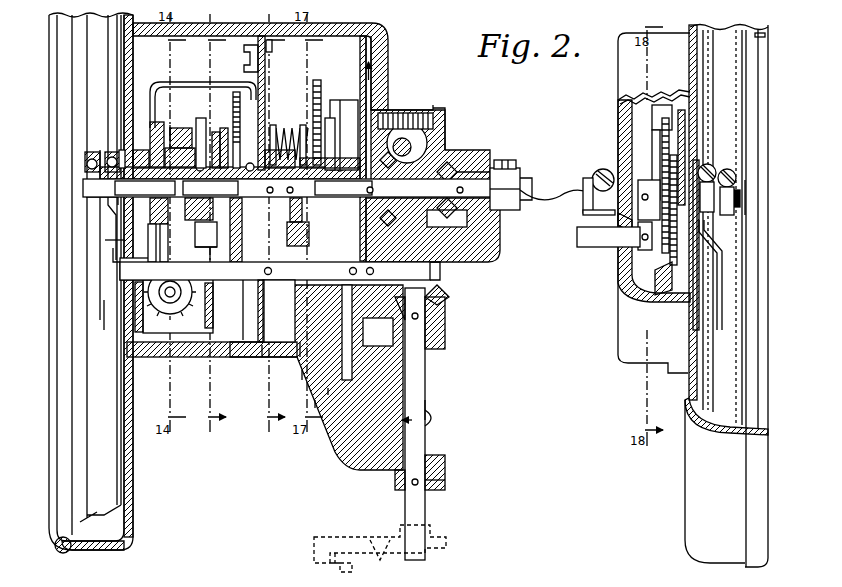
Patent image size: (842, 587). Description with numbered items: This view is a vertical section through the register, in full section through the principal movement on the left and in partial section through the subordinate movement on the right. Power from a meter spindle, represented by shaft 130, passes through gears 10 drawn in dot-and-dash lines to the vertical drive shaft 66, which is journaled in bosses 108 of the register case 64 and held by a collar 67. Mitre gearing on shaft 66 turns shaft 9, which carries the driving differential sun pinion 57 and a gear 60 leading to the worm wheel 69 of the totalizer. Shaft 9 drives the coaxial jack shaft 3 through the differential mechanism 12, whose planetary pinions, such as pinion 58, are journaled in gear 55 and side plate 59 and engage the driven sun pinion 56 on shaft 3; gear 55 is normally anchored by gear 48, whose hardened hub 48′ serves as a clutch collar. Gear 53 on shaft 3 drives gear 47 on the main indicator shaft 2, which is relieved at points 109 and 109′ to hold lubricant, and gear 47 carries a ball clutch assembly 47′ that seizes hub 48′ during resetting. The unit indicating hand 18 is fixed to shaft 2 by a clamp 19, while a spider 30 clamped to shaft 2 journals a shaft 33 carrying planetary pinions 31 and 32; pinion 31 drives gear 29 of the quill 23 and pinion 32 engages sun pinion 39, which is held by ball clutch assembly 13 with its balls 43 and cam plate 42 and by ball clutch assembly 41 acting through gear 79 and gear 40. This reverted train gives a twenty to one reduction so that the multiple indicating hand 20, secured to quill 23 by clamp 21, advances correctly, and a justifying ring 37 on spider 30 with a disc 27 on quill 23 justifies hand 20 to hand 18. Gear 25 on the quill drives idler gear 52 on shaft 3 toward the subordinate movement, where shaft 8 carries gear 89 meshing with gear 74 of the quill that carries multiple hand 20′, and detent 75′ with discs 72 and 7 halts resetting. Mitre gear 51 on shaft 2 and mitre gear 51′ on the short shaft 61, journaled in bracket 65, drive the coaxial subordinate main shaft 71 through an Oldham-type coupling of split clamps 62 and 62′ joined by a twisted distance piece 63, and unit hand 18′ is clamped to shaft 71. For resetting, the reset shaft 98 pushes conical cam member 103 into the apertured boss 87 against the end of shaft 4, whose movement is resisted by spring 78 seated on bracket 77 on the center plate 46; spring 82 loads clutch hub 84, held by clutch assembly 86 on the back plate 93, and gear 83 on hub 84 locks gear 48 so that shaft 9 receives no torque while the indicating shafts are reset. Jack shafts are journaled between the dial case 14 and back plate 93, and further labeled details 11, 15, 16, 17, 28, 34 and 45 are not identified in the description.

The main indicator shaft 2 is at (83, 188).
The jack shaft 3 is at (243, 278).
The shaft 4 is at (330, 118).
The disc 7 is at (672, 142).
The shaft of the subordinate movement 8 is at (598, 247).
The shaft 9 is at (412, 270).
The gears 10 is at (382, 553).
The pin 11 is at (158, 256).
The differential mechanism 12 is at (212, 371).
The ball clutch assembly 13 is at (238, 232).
The dial case 14 is at (74, 546).
The section line 15 is at (210, 223).
The section line 16 is at (269, 223).
The cover plate 17 is at (107, 492).
The unit indicating hand 18 is at (100, 230).
The unit indicating hand 18′ is at (728, 304).
The clamp 19 is at (88, 152).
The multiple indicating hand 20 is at (100, 312).
The multiple indicating hand 20′ is at (720, 383).
The clamp 21 is at (110, 152).
The sleeve or quill 23 is at (96, 212).
The gear 25 is at (124, 150).
The disc 27 is at (150, 140).
The strip 28 is at (112, 240).
The gear 29 is at (174, 138).
The spider 30 is at (168, 125).
The planetary pinion 31 is at (176, 252).
The planetary pinion 32 is at (212, 252).
The shaft 33 is at (205, 250).
The sleeve 34 is at (166, 128).
The justifying ring 37 is at (170, 125).
The sun pinion 39 is at (220, 135).
The gear 40 is at (243, 234).
The ball clutch assembly 41 is at (265, 98).
The ball clutch cam plate 42 is at (272, 46).
The clutch balls 43 is at (245, 60).
The pin 45 is at (260, 189).
The center plate 46 is at (258, 312).
The gear 47 is at (272, 125).
The ball clutch assembly 47′ is at (303, 125).
The gear 48 is at (386, 113).
The hardened steel hub 48′ is at (298, 190).
The mitre gear 51 is at (455, 168).
The mitre gear 51′ is at (470, 172).
The idler gear 52 is at (118, 252).
The gear 53 is at (285, 310).
The gear 55 is at (300, 345).
The driven differential sun pinion 56 is at (262, 345).
The driving differential sun pinion 57 is at (315, 405).
The differential planetary pinion 58 is at (297, 222).
The side plate 59 is at (330, 390).
The gear 60 is at (345, 405).
The short section of shaft 61 is at (504, 160).
The split clamp 62 is at (520, 212).
The split clamp 62′ is at (598, 168).
The twisted distance piece 63 is at (549, 205).
The register case 64 is at (388, 50).
The projecting bracket 65 is at (485, 238).
The vertical drive shaft 66 is at (428, 408).
The collar 67 is at (443, 483).
The worm wheel 69 is at (160, 307).
The main shaft of the subordinate movement 71 is at (746, 198).
The disc 72 is at (632, 222).
The gear 74 is at (694, 147).
The detent 75′ is at (660, 105).
The U-shaped supporting bracket 77 is at (212, 130).
The spring 78 is at (210, 135).
The gear 79 is at (236, 92).
The spring 82 is at (285, 135).
The gear 83 is at (322, 95).
The clutch hub 84 is at (340, 105).
The clutch assembly 86 is at (366, 130).
The apertured boss 87 is at (425, 142).
The gear 89 is at (670, 296).
The back plate 93 is at (366, 55).
The reset shaft 98 is at (440, 110).
The conical cam member 103 is at (438, 138).
The bosses 108 is at (447, 345).
The reduced-diameter point 109 is at (145, 188).
The reduced-diameter point 109′ is at (210, 188).
The shaft 130 is at (340, 565).